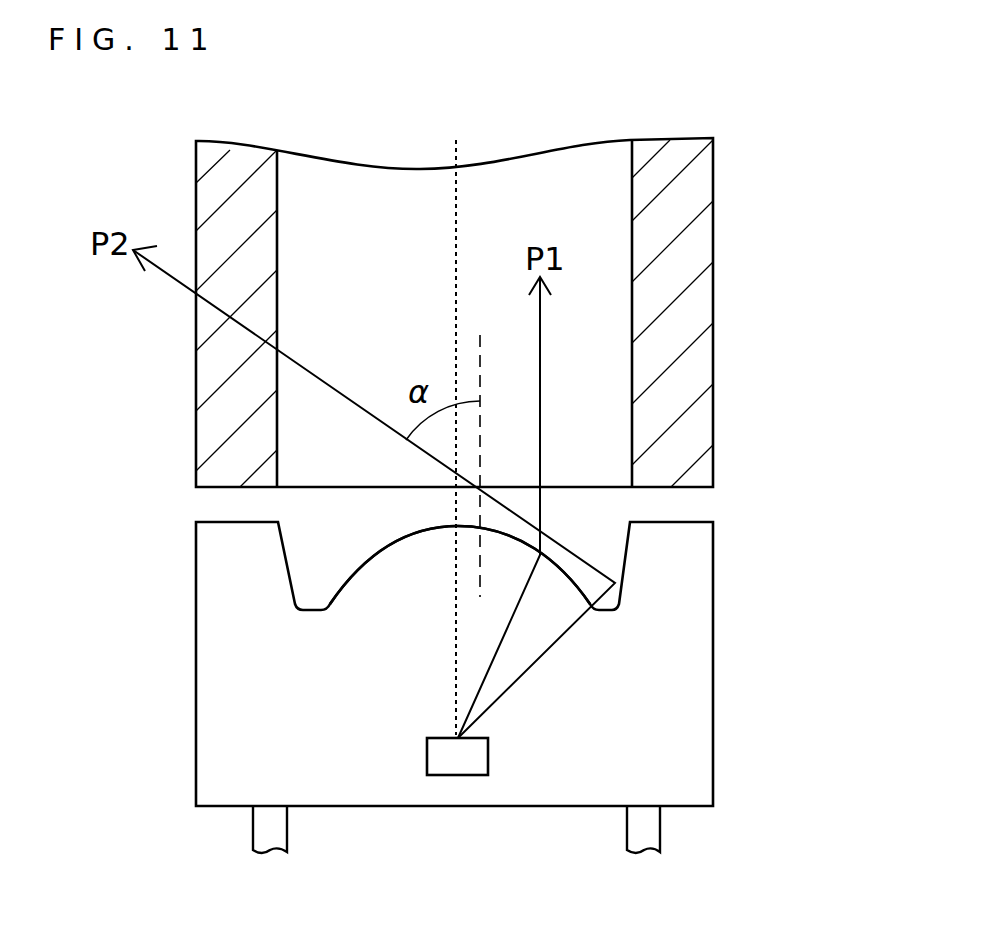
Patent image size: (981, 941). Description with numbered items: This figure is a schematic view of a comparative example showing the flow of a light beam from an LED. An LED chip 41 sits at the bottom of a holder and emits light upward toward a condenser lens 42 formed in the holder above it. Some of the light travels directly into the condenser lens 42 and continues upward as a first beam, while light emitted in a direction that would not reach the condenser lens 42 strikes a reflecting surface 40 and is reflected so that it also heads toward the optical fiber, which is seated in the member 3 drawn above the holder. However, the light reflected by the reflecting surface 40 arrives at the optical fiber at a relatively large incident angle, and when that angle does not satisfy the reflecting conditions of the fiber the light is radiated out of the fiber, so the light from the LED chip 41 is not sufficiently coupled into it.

The cover 3 is at (713, 253).
The reflecting surface 40 is at (627, 560).
The LED chip 41 is at (467, 775).
The condenser lens 42 is at (345, 575).